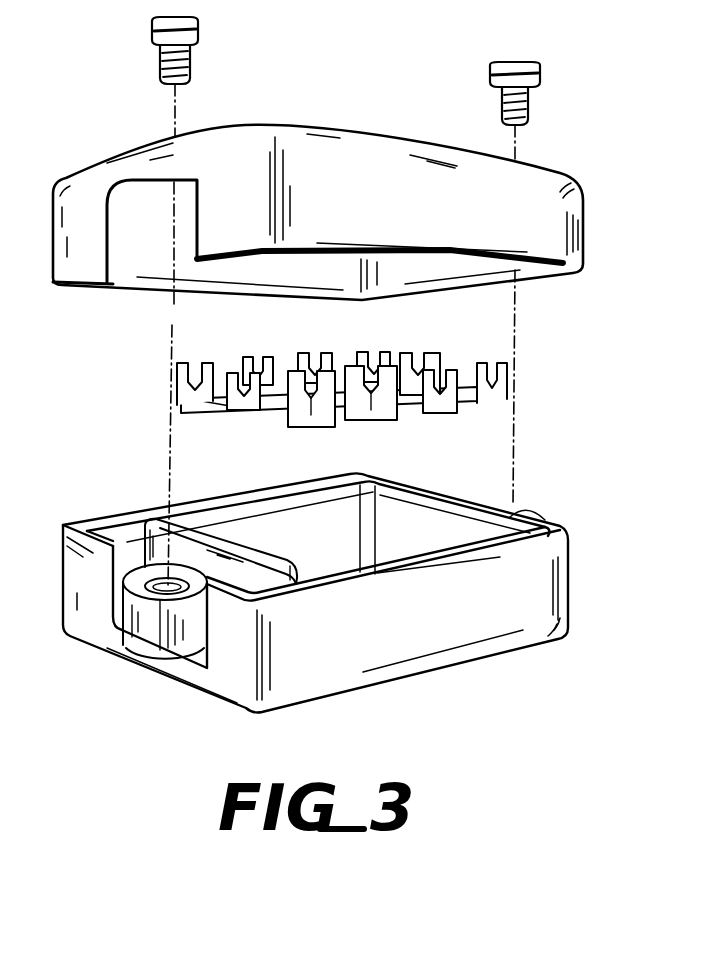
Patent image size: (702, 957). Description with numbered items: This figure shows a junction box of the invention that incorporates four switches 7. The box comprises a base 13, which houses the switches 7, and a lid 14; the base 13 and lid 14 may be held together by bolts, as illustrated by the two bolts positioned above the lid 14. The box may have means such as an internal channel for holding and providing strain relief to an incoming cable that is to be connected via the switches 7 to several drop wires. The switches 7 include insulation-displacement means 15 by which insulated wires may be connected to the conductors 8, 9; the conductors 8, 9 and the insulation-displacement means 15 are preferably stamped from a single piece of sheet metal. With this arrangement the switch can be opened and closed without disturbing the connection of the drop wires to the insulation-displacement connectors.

The switches 7 is at (334, 398).
The conductor 8 is at (190, 415).
The conductor 9 is at (273, 421).
The base 13 is at (393, 620).
The lid 14 is at (350, 197).
The insulation-displacement means 15 is at (177, 382).